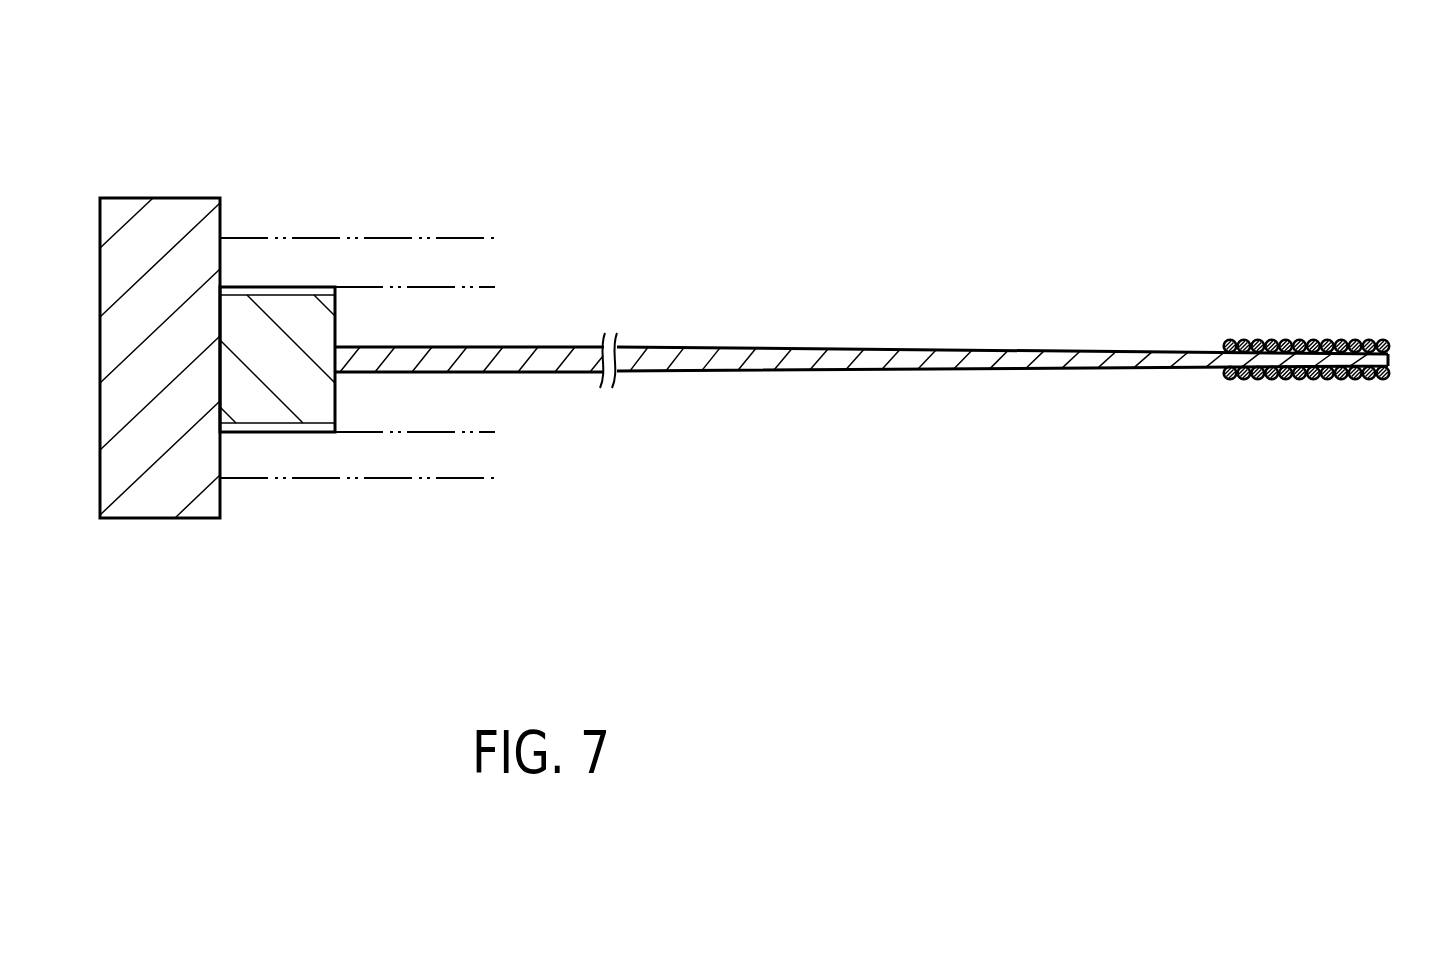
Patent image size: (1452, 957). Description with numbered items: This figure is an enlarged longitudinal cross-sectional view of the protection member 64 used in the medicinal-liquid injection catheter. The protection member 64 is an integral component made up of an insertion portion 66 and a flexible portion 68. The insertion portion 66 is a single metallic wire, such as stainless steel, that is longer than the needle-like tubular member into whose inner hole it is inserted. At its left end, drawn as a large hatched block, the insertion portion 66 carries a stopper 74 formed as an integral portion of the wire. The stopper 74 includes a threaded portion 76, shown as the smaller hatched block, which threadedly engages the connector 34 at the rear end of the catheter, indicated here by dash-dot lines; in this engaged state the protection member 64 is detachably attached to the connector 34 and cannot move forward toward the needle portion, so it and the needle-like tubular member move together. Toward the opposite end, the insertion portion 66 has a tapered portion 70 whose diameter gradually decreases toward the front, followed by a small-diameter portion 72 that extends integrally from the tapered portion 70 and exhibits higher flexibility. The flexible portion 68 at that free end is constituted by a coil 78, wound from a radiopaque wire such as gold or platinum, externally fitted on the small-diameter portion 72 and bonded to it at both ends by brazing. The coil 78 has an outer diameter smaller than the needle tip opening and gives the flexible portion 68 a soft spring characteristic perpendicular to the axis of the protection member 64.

The connector 34 is at (376, 462).
The protection member 64 is at (792, 320).
The insertion portion 66 is at (545, 365).
The flexible portion 68 is at (1302, 353).
The tapered portion 70 is at (977, 360).
The small-diameter portion 72 is at (1310, 373).
The stopper 74 is at (163, 218).
The threaded portion 76 is at (267, 287).
The coil 78 is at (1272, 340).